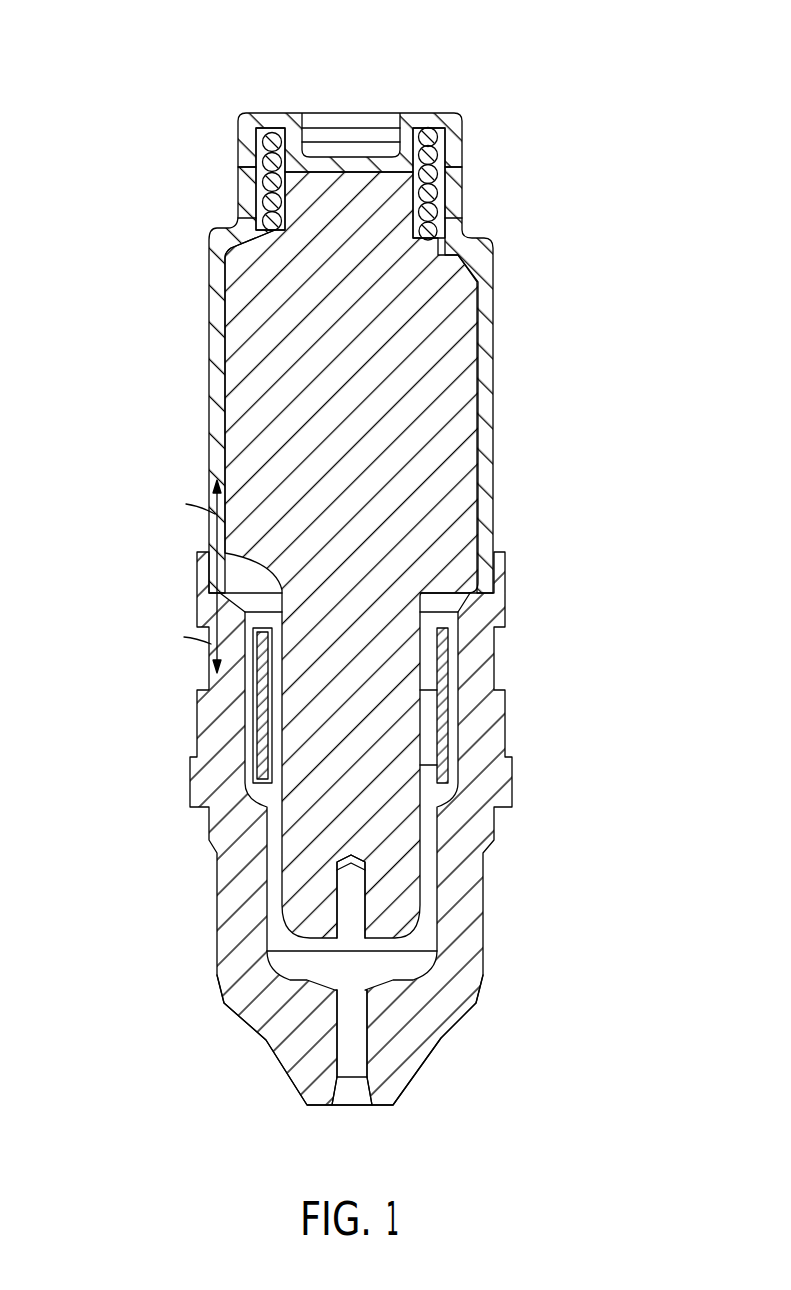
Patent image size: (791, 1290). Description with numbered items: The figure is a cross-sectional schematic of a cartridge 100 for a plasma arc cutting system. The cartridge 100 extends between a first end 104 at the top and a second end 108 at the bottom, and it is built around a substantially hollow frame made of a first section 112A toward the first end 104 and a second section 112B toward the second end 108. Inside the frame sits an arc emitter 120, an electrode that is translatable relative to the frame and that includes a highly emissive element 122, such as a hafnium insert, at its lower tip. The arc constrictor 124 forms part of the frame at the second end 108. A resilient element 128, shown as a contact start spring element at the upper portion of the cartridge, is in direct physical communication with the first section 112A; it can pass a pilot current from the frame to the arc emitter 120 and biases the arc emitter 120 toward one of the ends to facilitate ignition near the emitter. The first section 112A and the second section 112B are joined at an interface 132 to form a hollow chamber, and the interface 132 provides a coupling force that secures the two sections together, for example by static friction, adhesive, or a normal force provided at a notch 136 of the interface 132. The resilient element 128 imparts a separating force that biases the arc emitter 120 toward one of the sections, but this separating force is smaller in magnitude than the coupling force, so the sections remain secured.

The cartridge 100 is at (90, 182).
The first end 104 is at (435, 75).
The second end 108 is at (431, 1088).
The first section 112A is at (495, 302).
The second section 112B is at (506, 722).
The arc emitter 120 is at (466, 382).
The highly emissive element 122 is at (358, 898).
The arc constrictor 124 is at (424, 1062).
The resilient element 128 is at (439, 193).
The interface 132 is at (207, 583).
The notch 136 is at (491, 580).